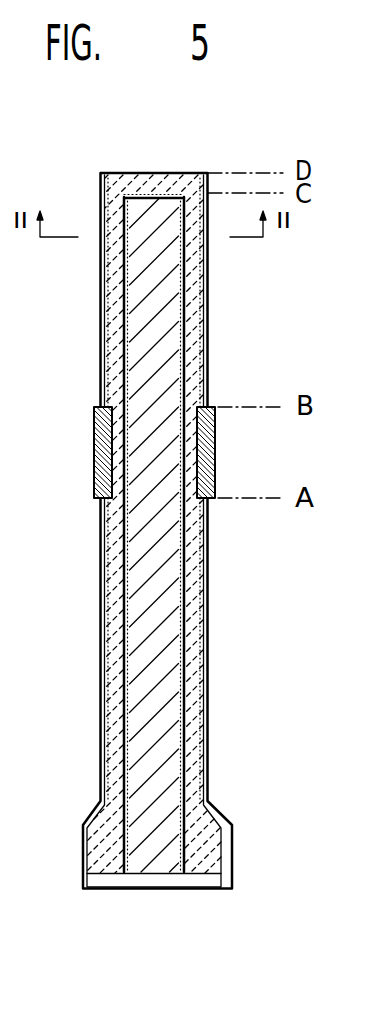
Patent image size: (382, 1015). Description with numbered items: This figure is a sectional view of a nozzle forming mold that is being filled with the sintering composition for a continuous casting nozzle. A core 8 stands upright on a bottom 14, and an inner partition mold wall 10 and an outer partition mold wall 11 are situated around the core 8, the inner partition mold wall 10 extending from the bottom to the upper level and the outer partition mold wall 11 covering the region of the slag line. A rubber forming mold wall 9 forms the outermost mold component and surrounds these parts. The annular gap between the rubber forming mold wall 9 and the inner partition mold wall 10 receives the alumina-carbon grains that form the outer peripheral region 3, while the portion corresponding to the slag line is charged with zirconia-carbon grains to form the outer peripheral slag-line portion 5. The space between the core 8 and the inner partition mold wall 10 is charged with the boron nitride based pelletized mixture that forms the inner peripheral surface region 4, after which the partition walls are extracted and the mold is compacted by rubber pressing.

The outer peripheral region 3 is at (200, 657).
The inner peripheral surface region 4 is at (185, 357).
The outer peripheral slag-line portion 5 is at (94, 456).
The core 8 is at (155, 277).
The rubber forming mold wall 9 is at (102, 612).
The inner partition mold wall 10 is at (132, 174).
The outer partition mold wall 11 is at (100, 180).
The bottom 14 is at (112, 884).